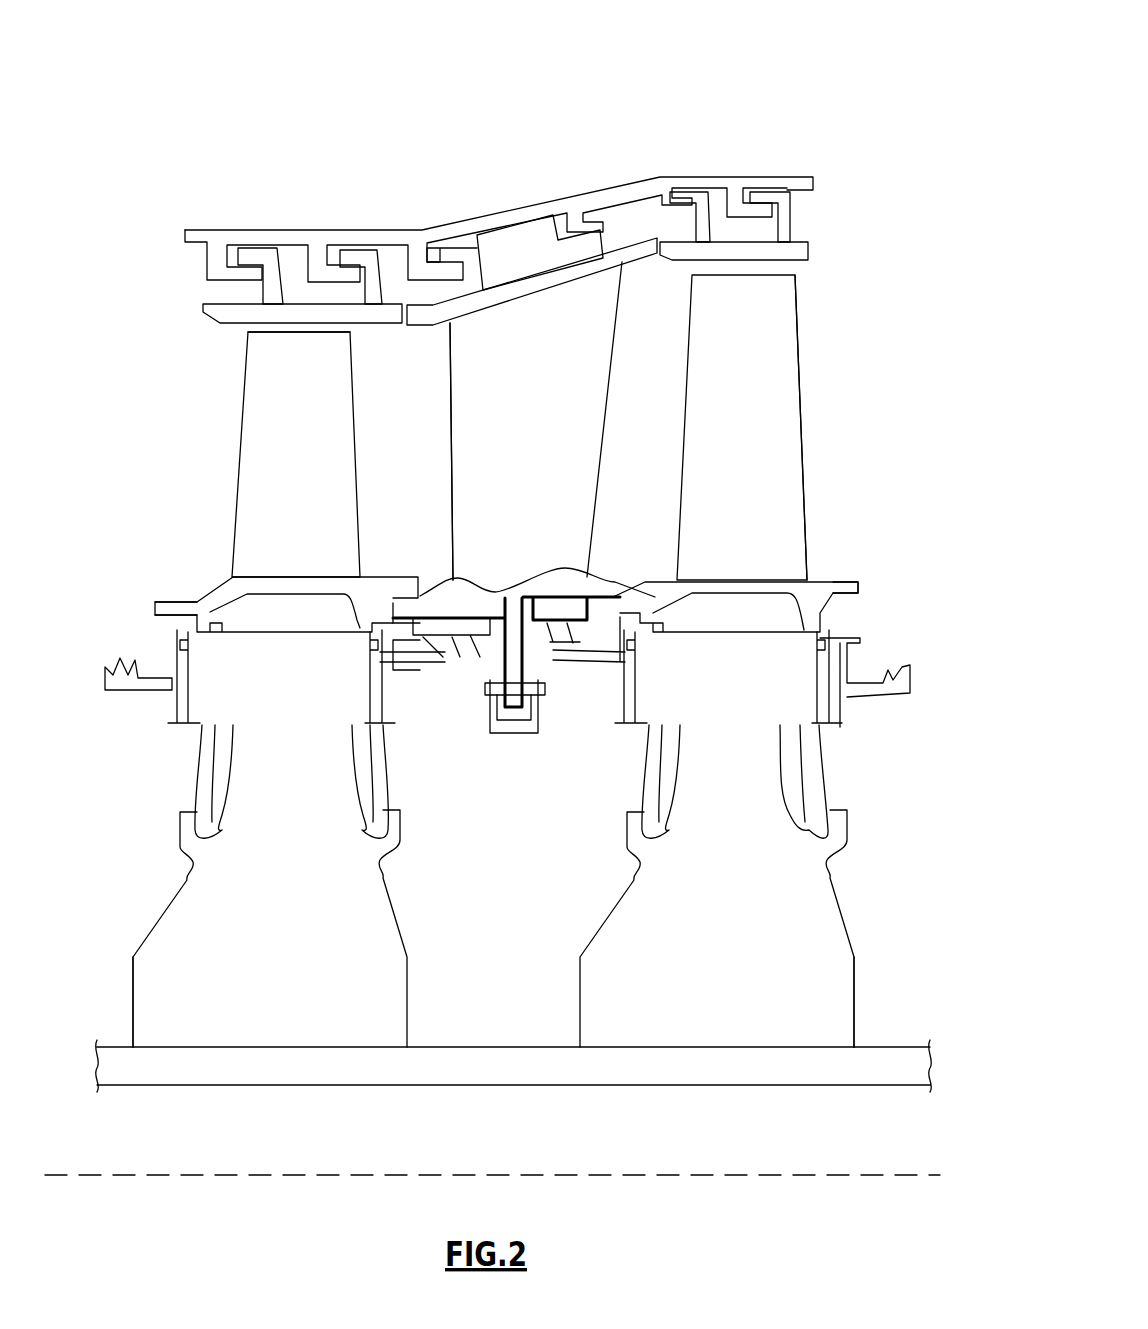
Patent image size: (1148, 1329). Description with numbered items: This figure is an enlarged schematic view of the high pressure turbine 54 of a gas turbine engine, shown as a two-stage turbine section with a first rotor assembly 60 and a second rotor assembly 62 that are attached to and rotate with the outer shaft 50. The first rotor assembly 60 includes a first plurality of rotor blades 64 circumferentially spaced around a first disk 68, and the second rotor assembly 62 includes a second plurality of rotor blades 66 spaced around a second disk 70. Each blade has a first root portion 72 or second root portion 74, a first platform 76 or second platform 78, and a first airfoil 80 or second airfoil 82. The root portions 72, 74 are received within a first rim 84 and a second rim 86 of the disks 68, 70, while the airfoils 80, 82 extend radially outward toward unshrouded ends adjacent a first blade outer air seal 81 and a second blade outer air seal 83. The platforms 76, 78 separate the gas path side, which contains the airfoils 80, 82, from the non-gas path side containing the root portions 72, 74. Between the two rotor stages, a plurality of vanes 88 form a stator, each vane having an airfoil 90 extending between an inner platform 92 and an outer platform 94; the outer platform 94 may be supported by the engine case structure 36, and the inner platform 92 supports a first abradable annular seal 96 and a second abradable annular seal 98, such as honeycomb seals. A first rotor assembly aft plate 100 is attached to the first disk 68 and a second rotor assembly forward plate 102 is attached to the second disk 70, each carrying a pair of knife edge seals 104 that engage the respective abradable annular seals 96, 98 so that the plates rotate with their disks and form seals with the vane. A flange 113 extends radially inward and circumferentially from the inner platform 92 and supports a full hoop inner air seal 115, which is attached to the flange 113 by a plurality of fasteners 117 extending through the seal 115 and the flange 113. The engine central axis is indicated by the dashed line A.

The engine case structure 36 is at (518, 206).
The outer shaft 50 is at (905, 1050).
The high pressure turbine 54 is at (814, 76).
The first rotor assembly 60 is at (136, 826).
The second rotor assembly 62 is at (840, 886).
The first plurality of rotor blades 64 is at (208, 421).
The second plurality of rotor blades 66 is at (820, 396).
The first disk 68 is at (392, 903).
The second disk 70 is at (845, 932).
The first root portion 72 is at (286, 604).
The second root portion 74 is at (735, 607).
The first platform 76 is at (212, 592).
The second platform 78 is at (833, 582).
The first airfoil 80 is at (296, 454).
The first blade outer air seal 81 is at (210, 323).
The second airfoil 82 is at (742, 427).
The second blade outer air seal 83 is at (810, 257).
The first rim 84 is at (217, 685).
The second rim 86 is at (795, 685).
The vanes 88 is at (446, 433).
The airfoil 90 is at (536, 421).
The inner platform 92 is at (598, 590).
The outer platform 94 is at (630, 278).
The first abradable annular seal 96 is at (478, 652).
The second abradable annular seal 98 is at (535, 655).
The first rotor assembly aft plate 100 is at (388, 735).
The second rotor assembly forward plate 102 is at (622, 760).
The knife edge seals 104 is at (445, 640).
The flange 113 is at (530, 688).
The full hoop inner air seal 115 is at (515, 735).
The fasteners 117 is at (545, 700).
The engine central axis A is at (890, 1175).